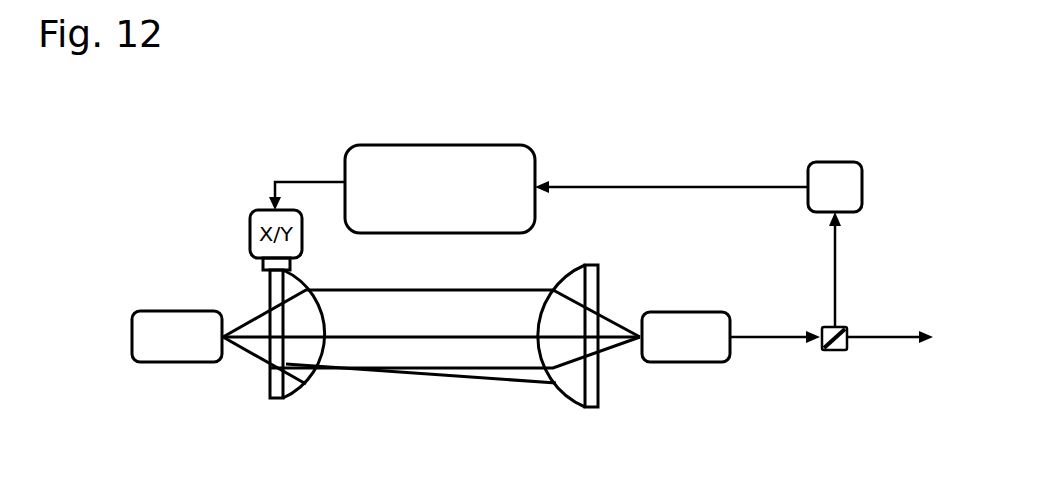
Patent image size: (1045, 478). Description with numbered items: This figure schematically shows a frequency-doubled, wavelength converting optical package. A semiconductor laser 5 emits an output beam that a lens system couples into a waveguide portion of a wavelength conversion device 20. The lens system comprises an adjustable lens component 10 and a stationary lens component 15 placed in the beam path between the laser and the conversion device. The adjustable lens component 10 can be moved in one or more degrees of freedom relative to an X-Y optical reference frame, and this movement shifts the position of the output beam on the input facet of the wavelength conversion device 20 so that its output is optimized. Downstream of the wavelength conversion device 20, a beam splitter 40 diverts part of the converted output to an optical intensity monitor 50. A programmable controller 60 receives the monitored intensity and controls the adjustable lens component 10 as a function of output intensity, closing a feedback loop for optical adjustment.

The semiconductor laser 5 is at (155, 363).
The adjustable lens component 10 is at (292, 392).
The stationary lens component 15 is at (563, 392).
The wavelength conversion device 20 is at (687, 362).
The beam splitter 40 is at (833, 350).
The optical intensity monitor 50 is at (862, 177).
The programmable controller 60 is at (497, 233).